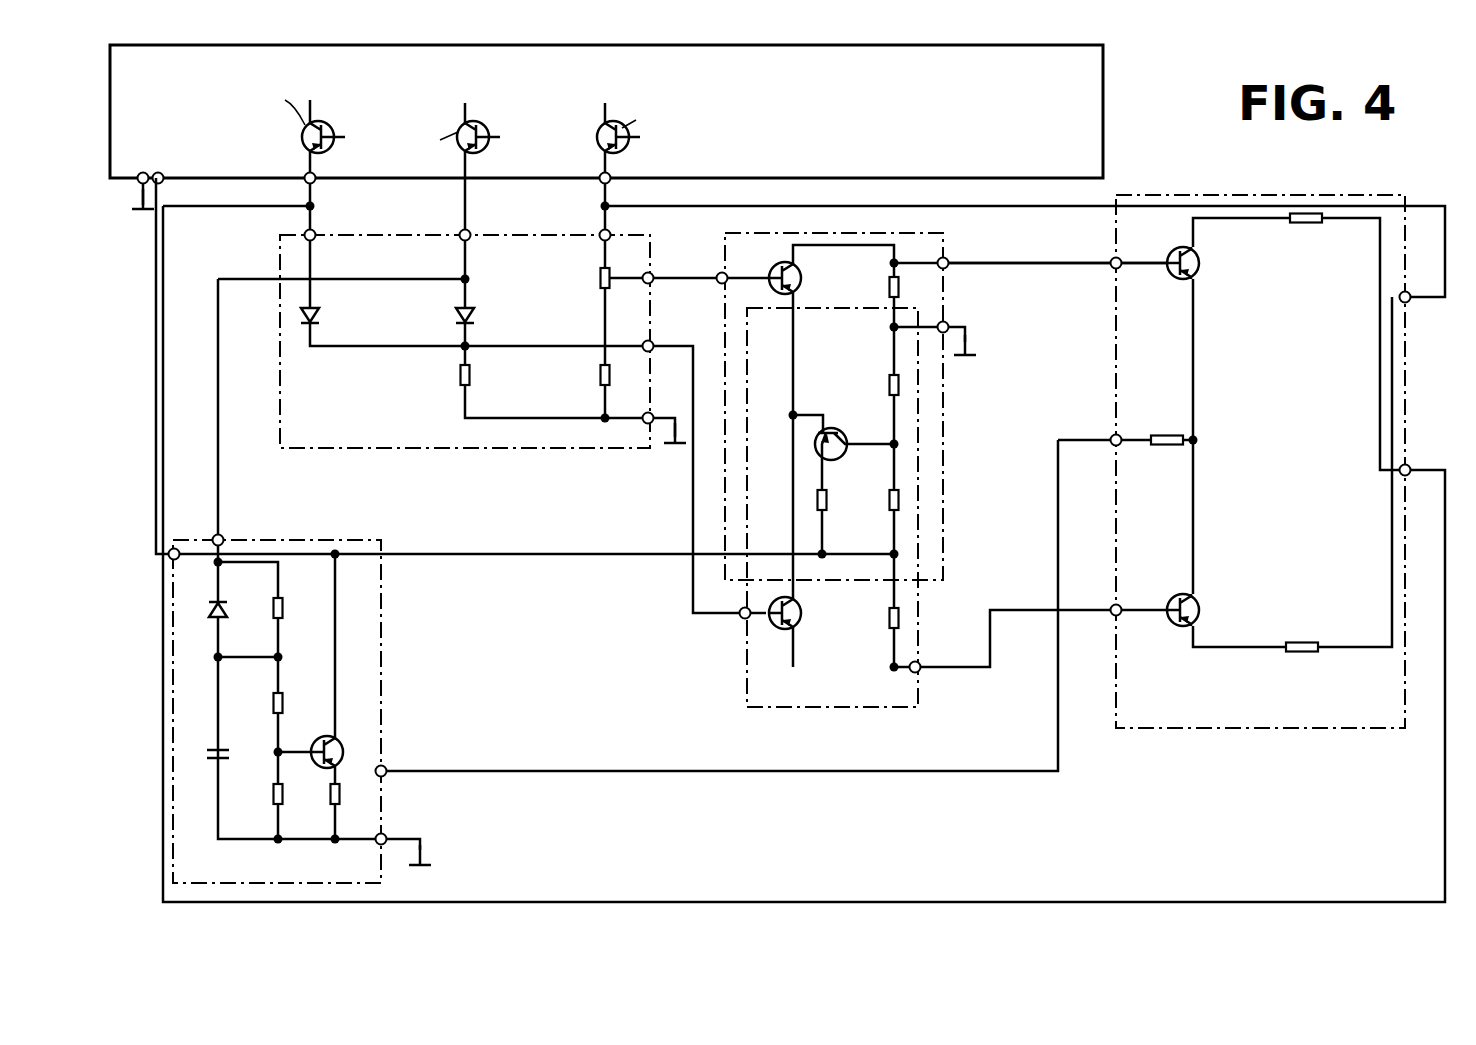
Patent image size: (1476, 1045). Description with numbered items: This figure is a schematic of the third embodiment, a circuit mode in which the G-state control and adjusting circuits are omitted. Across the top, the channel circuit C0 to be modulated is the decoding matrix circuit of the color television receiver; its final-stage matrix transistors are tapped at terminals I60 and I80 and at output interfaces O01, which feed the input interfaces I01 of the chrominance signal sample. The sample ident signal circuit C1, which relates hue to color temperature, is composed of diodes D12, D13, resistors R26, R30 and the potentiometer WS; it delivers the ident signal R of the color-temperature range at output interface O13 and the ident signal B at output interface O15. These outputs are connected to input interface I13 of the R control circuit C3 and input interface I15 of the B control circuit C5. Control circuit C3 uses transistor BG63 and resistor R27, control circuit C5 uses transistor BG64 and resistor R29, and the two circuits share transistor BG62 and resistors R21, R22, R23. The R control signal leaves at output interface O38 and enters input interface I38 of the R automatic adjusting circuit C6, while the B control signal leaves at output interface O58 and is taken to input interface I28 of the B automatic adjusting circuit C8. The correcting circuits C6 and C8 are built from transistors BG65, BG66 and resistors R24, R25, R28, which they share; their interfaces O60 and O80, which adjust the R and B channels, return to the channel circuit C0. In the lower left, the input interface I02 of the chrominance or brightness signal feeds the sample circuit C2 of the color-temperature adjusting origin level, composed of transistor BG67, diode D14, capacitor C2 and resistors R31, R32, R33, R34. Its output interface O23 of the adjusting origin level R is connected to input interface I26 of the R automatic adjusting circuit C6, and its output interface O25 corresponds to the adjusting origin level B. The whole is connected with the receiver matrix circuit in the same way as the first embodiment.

The channel circuit C0 is at (1103, 120).
The sample ident signal circuit C1 is at (482, 472).
The sample circuit of the color-temperature adjusting origin level C2 is at (381, 700).
The control circuit of the color-temperature state R C3 is at (943, 490).
The control circuit of the color-temperature state B C5 is at (838, 707).
The automatic adjusting circuit of the color-temperature state R C6 is at (1137, 247).
The automatic adjusting circuit of the color-temperature state B C8 is at (1248, 728).
The diode D12 is at (329, 322).
The diode D13 is at (483, 322).
The diode D14 is at (237, 614).
The potentiometer WS is at (578, 291).
The resistor R21 is at (874, 497).
The resistor R22 is at (841, 511).
The resistor R23 is at (872, 389).
The resistor R24 is at (1306, 236).
The resistor R25 is at (1301, 633).
The resistor R26 is at (583, 381).
The resistor R27 is at (873, 292).
The resistor R28 is at (1166, 459).
The resistor R29 is at (870, 623).
The resistor R30 is at (485, 381).
The resistor R31 is at (298, 613).
The resistor R32 is at (258, 707).
The resistor R33 is at (259, 798).
The resistor R34 is at (315, 798).
The transistor BG62 is at (844, 431).
The transistor BG63 is at (811, 275).
The transistor BG64 is at (806, 629).
The transistor BG65 is at (1210, 269).
The transistor BG66 is at (1207, 597).
The transistor BG67 is at (313, 741).
The input terminal I60 is at (326, 171).
The input terminal I80 is at (621, 171).
The output terminals O'01, O''01, O'''01 O01 is at (485, 199).
The input interface of the chrominance signal sample I01 is at (473, 228).
The output interface of the ident signal R O13 is at (666, 264).
The input interface of the ident signal R I13 is at (705, 293).
The output interface of the ident signal B O15 is at (666, 369).
The input interface of the ident signal B I15 is at (725, 603).
The output interface of the R control signal O38 is at (961, 283).
The input interface of the R control signal I38 is at (1092, 251).
The output interface of the B control signal O58 is at (933, 656).
The input interface of the adjusting origin level R I26 is at (1093, 429).
The input interface of the adjusting origin level B I28 is at (1093, 533).
The interface adjusting the channel of the color-temperature R O60 is at (1423, 307).
The interface adjusting the channel of the color-temperature state O80 is at (1423, 461).
The output interface of the adjusting origin level R O23 is at (402, 762).
The output interface of the adjusting origin level B O25 is at (402, 819).
The input interface of the chrominance or brightness signal I02 is at (223, 528).